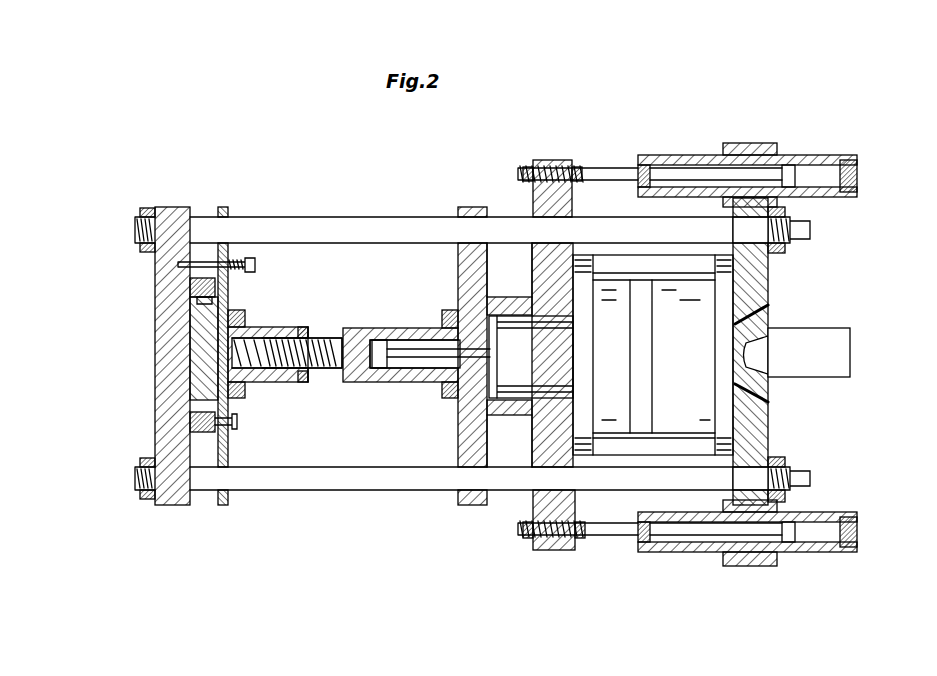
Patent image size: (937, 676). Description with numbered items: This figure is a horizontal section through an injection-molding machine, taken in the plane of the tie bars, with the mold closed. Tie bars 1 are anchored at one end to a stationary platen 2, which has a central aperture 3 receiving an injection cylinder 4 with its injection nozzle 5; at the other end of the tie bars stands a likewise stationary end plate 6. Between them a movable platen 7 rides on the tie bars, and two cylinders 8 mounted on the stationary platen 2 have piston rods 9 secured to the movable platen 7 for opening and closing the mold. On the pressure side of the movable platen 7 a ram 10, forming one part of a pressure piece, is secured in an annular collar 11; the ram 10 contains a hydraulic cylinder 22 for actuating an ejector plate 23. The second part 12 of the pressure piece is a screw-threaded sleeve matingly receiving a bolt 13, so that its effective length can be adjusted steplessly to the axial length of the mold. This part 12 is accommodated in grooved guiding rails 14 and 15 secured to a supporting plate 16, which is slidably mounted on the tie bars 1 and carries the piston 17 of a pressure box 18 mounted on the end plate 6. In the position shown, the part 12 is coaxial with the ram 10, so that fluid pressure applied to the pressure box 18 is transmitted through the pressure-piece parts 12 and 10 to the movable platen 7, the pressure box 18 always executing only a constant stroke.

The tie bars 1 is at (248, 232).
The stationary platen 2 is at (770, 272).
The central aperture 3 is at (760, 318).
The injection cylinder 4 is at (840, 345).
The injection nozzle 5 is at (750, 352).
The end plate 6 is at (165, 207).
The movable platen 7 is at (478, 207).
The cylinders 8 is at (773, 150).
The piston rods 9 is at (622, 170).
The ram 10 is at (360, 345).
The annular collar 11 is at (449, 310).
The second part of the pressure piece 12 is at (281, 336).
The bolt 13 is at (340, 338).
The grooved guiding rail 14 is at (205, 292).
The grooved guiding rail 15 is at (228, 404).
The supporting plate 16 is at (222, 207).
The piston 17 is at (195, 325).
The pressure box 18 is at (200, 428).
The hydraulic cylinder 22 is at (386, 350).
The ejector plate 23 is at (458, 400).